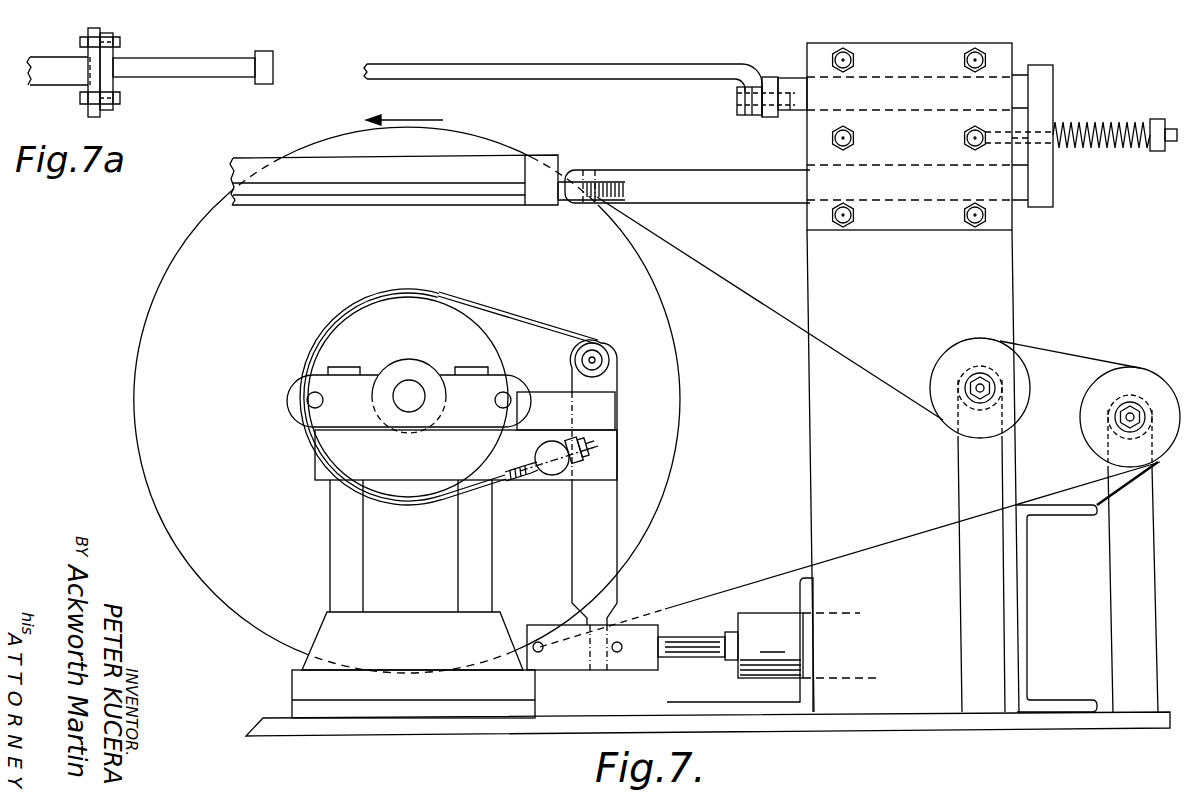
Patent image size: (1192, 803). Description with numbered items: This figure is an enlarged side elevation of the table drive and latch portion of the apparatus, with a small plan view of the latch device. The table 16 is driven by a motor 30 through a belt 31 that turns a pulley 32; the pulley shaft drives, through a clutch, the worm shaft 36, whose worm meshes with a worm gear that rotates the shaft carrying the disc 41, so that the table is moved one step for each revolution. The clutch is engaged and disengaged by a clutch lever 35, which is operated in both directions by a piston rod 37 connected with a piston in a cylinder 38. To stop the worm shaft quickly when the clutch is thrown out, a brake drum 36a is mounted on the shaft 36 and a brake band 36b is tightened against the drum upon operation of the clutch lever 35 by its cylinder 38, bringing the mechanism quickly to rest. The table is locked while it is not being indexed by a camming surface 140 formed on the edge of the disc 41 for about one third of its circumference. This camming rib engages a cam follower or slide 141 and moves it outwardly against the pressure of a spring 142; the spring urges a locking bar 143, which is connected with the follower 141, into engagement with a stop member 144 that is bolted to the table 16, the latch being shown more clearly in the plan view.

In FIG. 7A, the table 16 is at (50, 62).
In FIG. 7, the table 16 is at (649, 80).
In FIG. 7A, the locking bar 143 is at (199, 62).
In FIG. 7, the locking bar 143 is at (798, 76).
In FIG. 7A, the stop member 144 is at (112, 82).
In FIG. 7, the stop member 144 is at (771, 113).
In FIG. 7, the spring 142 is at (1113, 118).
In FIG. 7, the cam follower or slide 141 is at (722, 162).
In FIG. 7, the disc 41 is at (512, 157).
In FIG. 7, the camming surface 140 is at (522, 206).
In FIG. 7, the belt 31 is at (752, 284).
In FIG. 7, the pulley 32 is at (681, 334).
In FIG. 7, the brake drum 36a is at (353, 332).
In FIG. 7, the brake band 36b is at (548, 318).
In FIG. 7, the worm shaft 36 is at (413, 393).
In FIG. 7, the clutch lever 35 is at (620, 503).
In FIG. 7, the motor 30 is at (1100, 368).
In FIG. 7, the piston rod 37 is at (706, 657).
In FIG. 7, the cylinder 38 is at (782, 613).